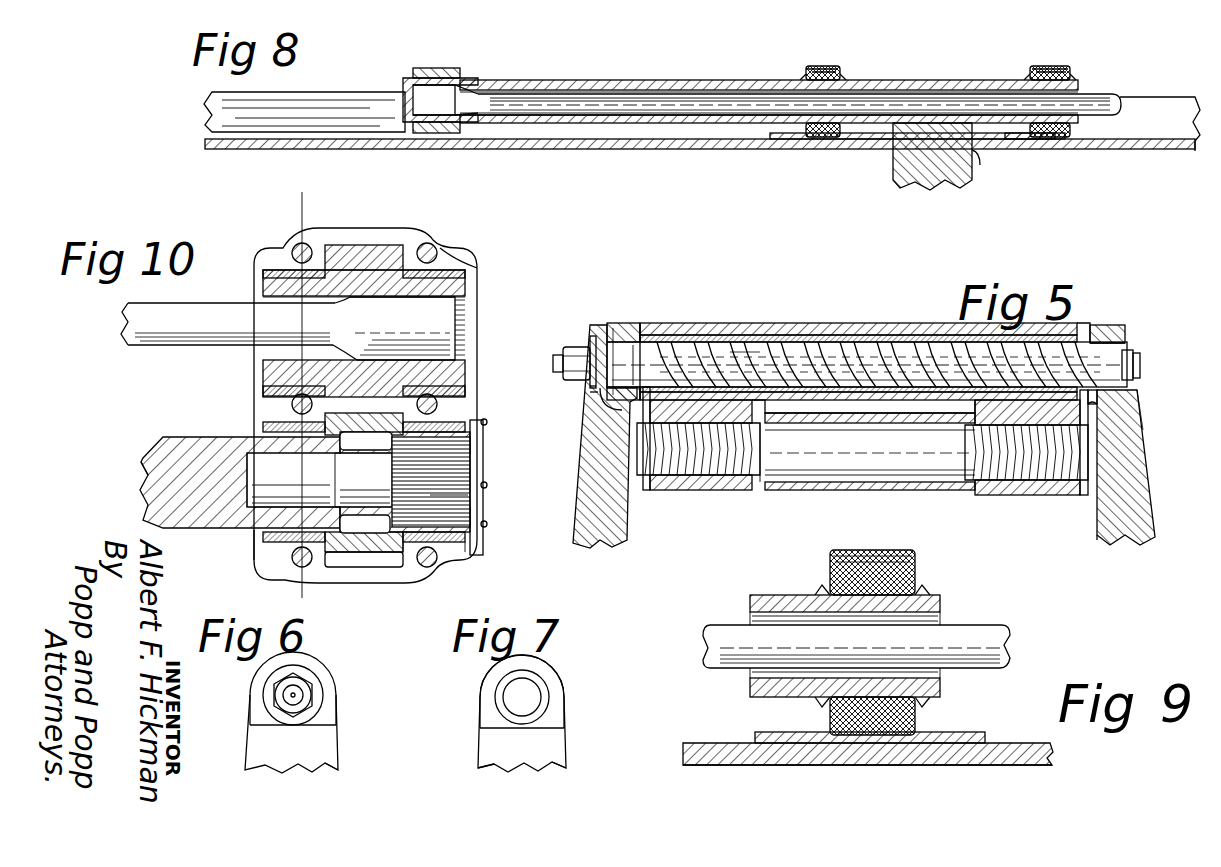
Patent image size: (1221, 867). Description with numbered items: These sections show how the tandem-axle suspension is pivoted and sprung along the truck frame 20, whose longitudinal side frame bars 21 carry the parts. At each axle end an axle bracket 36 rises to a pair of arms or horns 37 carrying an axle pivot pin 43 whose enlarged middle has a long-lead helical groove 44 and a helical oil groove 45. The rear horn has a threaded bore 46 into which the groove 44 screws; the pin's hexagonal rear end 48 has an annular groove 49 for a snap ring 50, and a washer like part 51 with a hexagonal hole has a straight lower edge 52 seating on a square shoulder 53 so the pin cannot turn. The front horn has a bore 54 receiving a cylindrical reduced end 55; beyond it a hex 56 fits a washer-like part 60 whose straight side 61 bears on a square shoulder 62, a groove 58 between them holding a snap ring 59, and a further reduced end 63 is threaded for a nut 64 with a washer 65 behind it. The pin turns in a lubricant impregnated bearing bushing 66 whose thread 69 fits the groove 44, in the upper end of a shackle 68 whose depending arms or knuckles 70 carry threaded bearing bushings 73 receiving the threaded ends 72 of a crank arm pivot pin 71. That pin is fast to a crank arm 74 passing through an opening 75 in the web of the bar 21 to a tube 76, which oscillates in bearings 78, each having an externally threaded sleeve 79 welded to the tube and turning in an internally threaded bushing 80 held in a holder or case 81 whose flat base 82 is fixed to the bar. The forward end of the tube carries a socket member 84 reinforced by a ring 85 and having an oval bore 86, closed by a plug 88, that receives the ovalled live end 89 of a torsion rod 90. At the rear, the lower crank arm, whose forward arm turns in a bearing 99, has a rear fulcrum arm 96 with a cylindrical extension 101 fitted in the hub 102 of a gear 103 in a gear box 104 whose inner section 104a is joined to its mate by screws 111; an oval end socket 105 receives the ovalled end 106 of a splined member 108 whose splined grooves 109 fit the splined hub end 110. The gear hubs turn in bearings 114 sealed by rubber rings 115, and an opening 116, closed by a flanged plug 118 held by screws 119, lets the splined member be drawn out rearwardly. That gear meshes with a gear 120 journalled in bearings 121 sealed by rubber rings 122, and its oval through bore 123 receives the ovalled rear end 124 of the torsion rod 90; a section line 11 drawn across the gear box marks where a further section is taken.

In FIG. 10, the section line 11 is at (287, 396).
In FIG. 8, the panel 20 is at (212, 112).
In FIG. 9, the panel 20 is at (698, 773).
In FIG. 8, the longitudinal side frame bar 21 is at (628, 150).
In FIG. 9, the longitudinal side frame bar 21 is at (1052, 754).
In FIG. 5, the axle bracket 36 is at (1103, 540).
In FIG. 6, the axle bracket 36 is at (250, 768).
In FIG. 7, the axle bracket 36 is at (467, 779).
In FIG. 5, the arms or horns 37 is at (625, 542).
In FIG. 6, the arms or horns 37 is at (337, 767).
In FIG. 7, the arms or horns 37 is at (551, 778).
In FIG. 5, the axle pivot pin 43 is at (850, 360).
In FIG. 6, the axle pivot pin 43 is at (293, 700).
In FIG. 7, the axle pivot pin 43 is at (533, 697).
In FIG. 5, the helical groove 44 is at (790, 355).
In FIG. 5, the helical oil groove 45 is at (742, 355).
In FIG. 5, the threaded bore 46 is at (1095, 330).
In FIG. 5, the hexagonal rear end 48 is at (1133, 362).
In FIG. 5, the annular groove 49 is at (1140, 376).
In FIG. 5, the snap ring 50 is at (1127, 345).
In FIG. 7, the snap ring 50 is at (541, 684).
In FIG. 5, the washer like part 51 is at (1130, 333).
In FIG. 7, the washer like part 51 is at (493, 677).
In FIG. 5, the lower edge 52 is at (1143, 428).
In FIG. 7, the lower edge 52 is at (556, 730).
In FIG. 5, the square shoulder 53 is at (1140, 393).
In FIG. 7, the square shoulder 53 is at (490, 728).
In FIG. 5, the bore 54 is at (636, 350).
In FIG. 5, the cylindrical reduced end 55 is at (655, 360).
In FIG. 5, the hex 56 is at (628, 328).
In FIG. 5, the groove 58 is at (598, 404).
In FIG. 5, the snap ring 59 is at (613, 328).
In FIG. 5, the washer-like part 60 is at (598, 333).
In FIG. 6, the washer-like part 60 is at (325, 706).
In FIG. 5, the straight side 61 is at (592, 394).
In FIG. 6, the straight side 61 is at (320, 728).
In FIG. 5, the square shoulder 62 is at (590, 386).
In FIG. 6, the square shoulder 62 is at (258, 722).
In FIG. 5, the further reduced end 63 is at (555, 363).
In FIG. 6, the further reduced end 63 is at (283, 693).
In FIG. 5, the nut 64 is at (576, 352).
In FIG. 6, the nut 64 is at (300, 690).
In FIG. 5, the washer 65 is at (566, 345).
In FIG. 6, the washer 65 is at (317, 690).
In FIG. 5, the bearing bushing 66 is at (822, 338).
In FIG. 5, the shackle 68 is at (892, 315).
In FIG. 5, the thread 69 is at (690, 338).
In FIG. 5, the arms or knuckles 70 is at (712, 490).
In FIG. 5, the crank arm pivot pin 71 is at (777, 464).
In FIG. 5, the threaded ends 72 is at (648, 492).
In FIG. 5, the threaded bearing bushing 73 is at (672, 478).
In FIG. 8, the crank arm 74 is at (932, 185).
In FIG. 5, the crank arm 74 is at (832, 492).
In FIG. 8, the opening 75 is at (980, 165).
In FIG. 8, the tube 76 is at (702, 82).
In FIG. 9, the tube 76 is at (757, 597).
In FIG. 8, the bearing 78 is at (826, 66).
In FIG. 9, the bearing 78 is at (892, 553).
In FIG. 8, the externally threaded metal sleeve 79 is at (806, 80).
In FIG. 9, the externally threaded metal sleeve 79 is at (820, 590).
In FIG. 8, the internally threaded bushing 80 is at (812, 68).
In FIG. 9, the internally threaded bushing 80 is at (917, 573).
In FIG. 8, the metal holder or case 81 is at (840, 72).
In FIG. 9, the metal holder or case 81 is at (834, 556).
In FIG. 8, the flat base 82 is at (798, 142).
In FIG. 9, the flat base 82 is at (1003, 727).
In FIG. 8, the socket member 84 is at (475, 83).
In FIG. 8, the surrounding ring 85 is at (438, 68).
In FIG. 8, the bore 86 is at (412, 128).
In FIG. 8, the plug 88 is at (408, 95).
In FIG. 8, the ovalled live end 89 is at (445, 100).
In FIG. 8, the torsion rod 90 is at (600, 98).
In FIG. 10, the torsion rod 90 is at (228, 324).
In FIG. 9, the torsion rod 90 is at (705, 639).
In FIG. 10, the rear fulcrum arm 96 is at (182, 447).
In FIG. 10, the bearing 99 is at (152, 450).
In FIG. 10, the cylindrical hub or extension 101 is at (262, 520).
In FIG. 10, the hub 102 is at (288, 480).
In FIG. 10, the gear 103 is at (367, 566).
In FIG. 10, the gear box 104 is at (397, 229).
In FIG. 10, the inner section 104a is at (460, 262).
In FIG. 10, the oval end socket 105 is at (340, 452).
In FIG. 10, the ovalled end 106 is at (347, 480).
In FIG. 10, the splined member 108 is at (458, 482).
In FIG. 10, the splined grooves 109 is at (445, 494).
In FIG. 10, the splined end of hub 110 is at (408, 542).
In FIG. 10, the screws 111 is at (428, 248).
In FIG. 10, the bearings 114 is at (292, 422).
In FIG. 10, the rubber ring 115 is at (265, 540).
In FIG. 10, the opening 116 is at (484, 438).
In FIG. 10, the flanged plug 118 is at (484, 522).
In FIG. 10, the screws 119 is at (486, 420).
In FIG. 10, the gear 120 is at (356, 240).
In FIG. 10, the bearings 121 is at (292, 248).
In FIG. 10, the rubber rings 122 is at (262, 268).
In FIG. 10, the through bore 123 is at (265, 297).
In FIG. 10, the ovalled rear end 124 is at (364, 333).